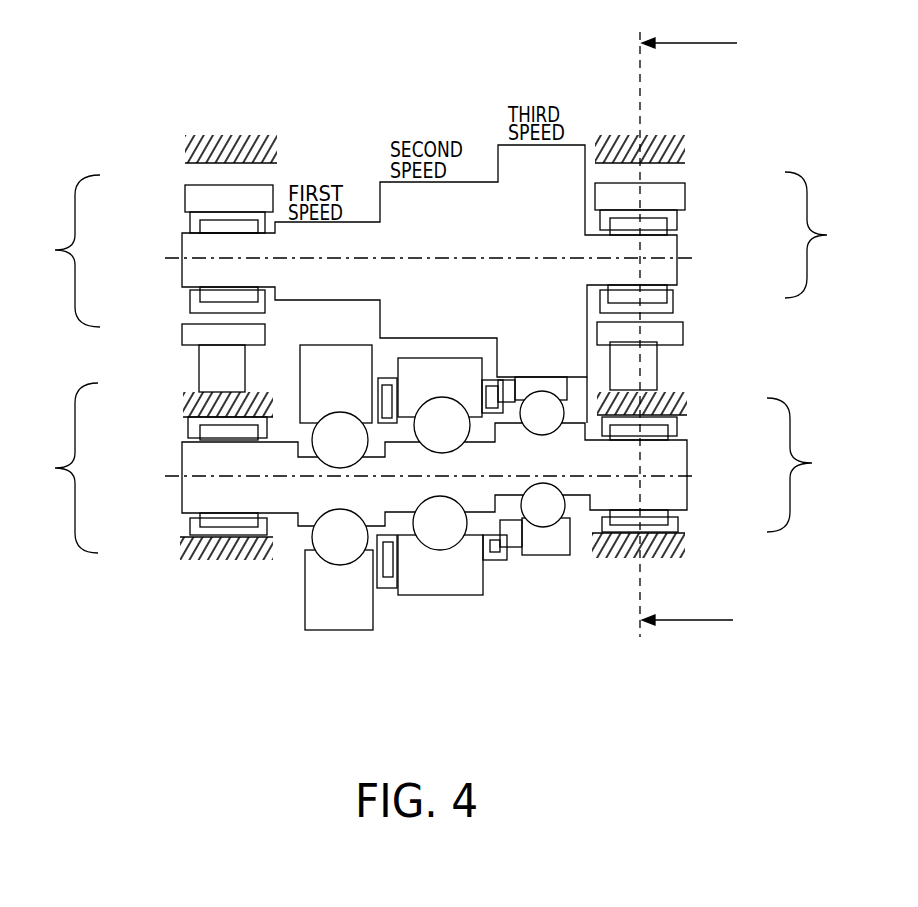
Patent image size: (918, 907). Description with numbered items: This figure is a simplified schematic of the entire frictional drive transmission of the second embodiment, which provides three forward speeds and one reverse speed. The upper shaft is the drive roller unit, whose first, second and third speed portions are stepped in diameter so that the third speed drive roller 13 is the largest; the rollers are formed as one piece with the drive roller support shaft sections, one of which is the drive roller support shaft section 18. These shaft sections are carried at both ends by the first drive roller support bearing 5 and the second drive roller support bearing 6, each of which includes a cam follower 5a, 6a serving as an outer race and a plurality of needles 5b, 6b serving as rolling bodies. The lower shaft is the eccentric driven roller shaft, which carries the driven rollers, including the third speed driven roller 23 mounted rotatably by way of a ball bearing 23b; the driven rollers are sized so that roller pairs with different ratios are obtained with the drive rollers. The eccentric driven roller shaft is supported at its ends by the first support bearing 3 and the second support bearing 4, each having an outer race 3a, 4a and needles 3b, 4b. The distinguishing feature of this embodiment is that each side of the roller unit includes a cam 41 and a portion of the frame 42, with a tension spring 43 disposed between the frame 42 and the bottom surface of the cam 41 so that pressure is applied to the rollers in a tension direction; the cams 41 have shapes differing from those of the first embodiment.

The third speed drive roller 13 is at (520, 154).
The drive roller support shaft section 18 is at (598, 275).
The third speed driven roller 23 is at (533, 545).
The ball bearing 23b is at (557, 505).
The first support bearing 3 is at (55, 468).
The outer race 3a is at (193, 423).
The needles 3b is at (193, 438).
The second support bearing 4 is at (798, 465).
The outer race 4a is at (678, 422).
The needles 4b is at (670, 433).
The first drive roller support bearing 5 is at (55, 250).
The cam follower 5a is at (190, 217).
The needles 5b is at (192, 233).
The second drive roller support bearing 6 is at (814, 235).
The cam follower 6a is at (677, 217).
The needles 6b is at (665, 232).
The cam 41 is at (193, 190).
The frame 42 is at (673, 145).
The tension spring 43 is at (218, 378).